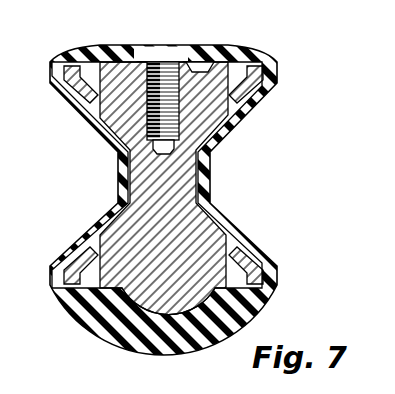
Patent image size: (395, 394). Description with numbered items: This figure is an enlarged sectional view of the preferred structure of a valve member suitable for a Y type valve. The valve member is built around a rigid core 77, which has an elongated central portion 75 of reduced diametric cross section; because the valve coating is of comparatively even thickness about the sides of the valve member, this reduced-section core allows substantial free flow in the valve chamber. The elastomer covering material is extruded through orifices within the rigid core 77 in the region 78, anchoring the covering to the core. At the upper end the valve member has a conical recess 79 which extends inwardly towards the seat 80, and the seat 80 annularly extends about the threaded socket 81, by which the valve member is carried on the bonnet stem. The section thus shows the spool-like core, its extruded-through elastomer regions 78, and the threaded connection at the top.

The elongated central portion 75 is at (175, 182).
The rigid core 77 is at (231, 45).
The region 78 is at (88, 88).
The conical recess 79 is at (131, 61).
The seat 80 is at (188, 61).
The threaded socket 81 is at (172, 76).